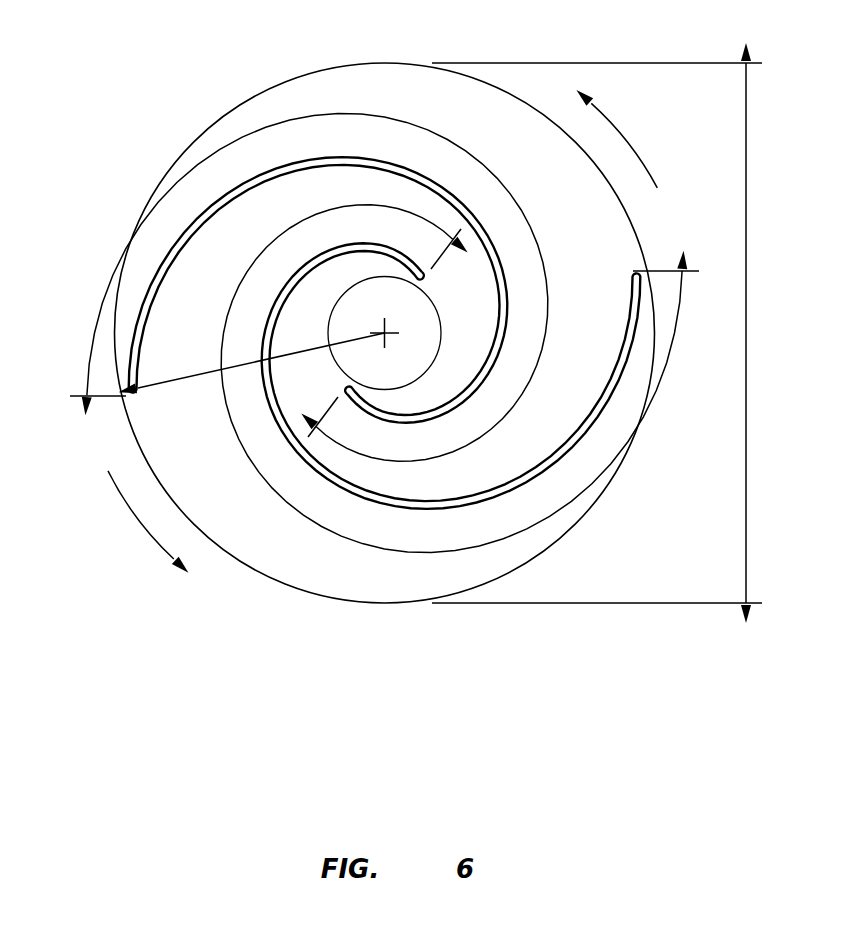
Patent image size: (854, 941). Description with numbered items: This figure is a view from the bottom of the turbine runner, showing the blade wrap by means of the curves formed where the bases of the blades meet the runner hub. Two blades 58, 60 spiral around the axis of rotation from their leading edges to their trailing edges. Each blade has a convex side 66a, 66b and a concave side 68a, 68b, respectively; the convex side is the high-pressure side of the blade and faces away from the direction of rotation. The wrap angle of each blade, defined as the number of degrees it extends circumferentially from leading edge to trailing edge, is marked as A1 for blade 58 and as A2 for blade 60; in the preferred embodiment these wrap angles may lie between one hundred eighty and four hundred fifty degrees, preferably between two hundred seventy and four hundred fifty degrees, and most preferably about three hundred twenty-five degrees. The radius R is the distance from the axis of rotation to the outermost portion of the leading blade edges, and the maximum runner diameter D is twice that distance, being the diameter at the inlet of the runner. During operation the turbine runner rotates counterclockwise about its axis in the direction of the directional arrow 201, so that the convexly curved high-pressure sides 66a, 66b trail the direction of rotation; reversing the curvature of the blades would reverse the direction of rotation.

The blade 58 is at (290, 228).
The blade 60 is at (451, 457).
The convex side 66a is at (215, 197).
The convex side 66b is at (377, 503).
The concave side 68a is at (165, 273).
The concave side 68b is at (617, 358).
The wrap angle A1 is at (366, 117).
The wrap angle A2 is at (272, 487).
The radius R is at (188, 380).
The maximum runner diameter D is at (748, 326).
The directional arrow 201 is at (128, 513).